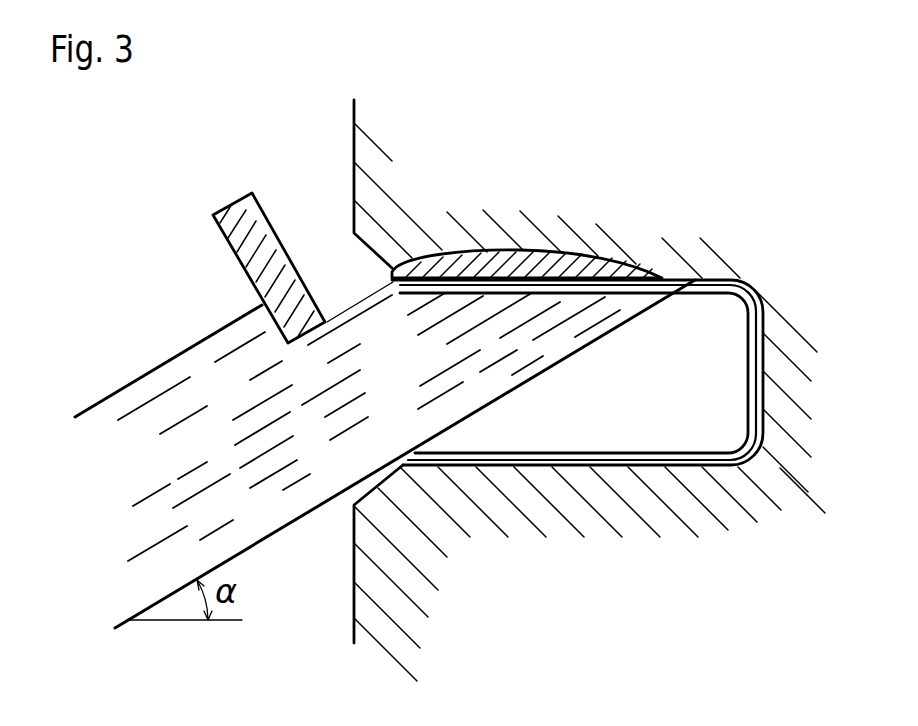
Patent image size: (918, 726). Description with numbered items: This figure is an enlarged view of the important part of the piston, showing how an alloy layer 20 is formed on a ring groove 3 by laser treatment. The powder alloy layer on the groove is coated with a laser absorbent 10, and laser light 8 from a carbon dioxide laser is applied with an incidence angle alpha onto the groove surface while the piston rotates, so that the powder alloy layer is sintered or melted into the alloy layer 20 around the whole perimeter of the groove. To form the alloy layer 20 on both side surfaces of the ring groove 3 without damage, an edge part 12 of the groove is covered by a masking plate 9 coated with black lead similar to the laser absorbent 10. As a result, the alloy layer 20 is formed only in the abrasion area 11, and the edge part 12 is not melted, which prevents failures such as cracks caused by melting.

The ring groove 3 is at (727, 356).
The laser light 8 is at (157, 365).
The masking plate 9 is at (247, 256).
The laser absorbent 10 is at (495, 437).
The abrasion area 11 is at (533, 265).
The edge part 12 is at (358, 250).
The alloy layer 20 is at (558, 283).